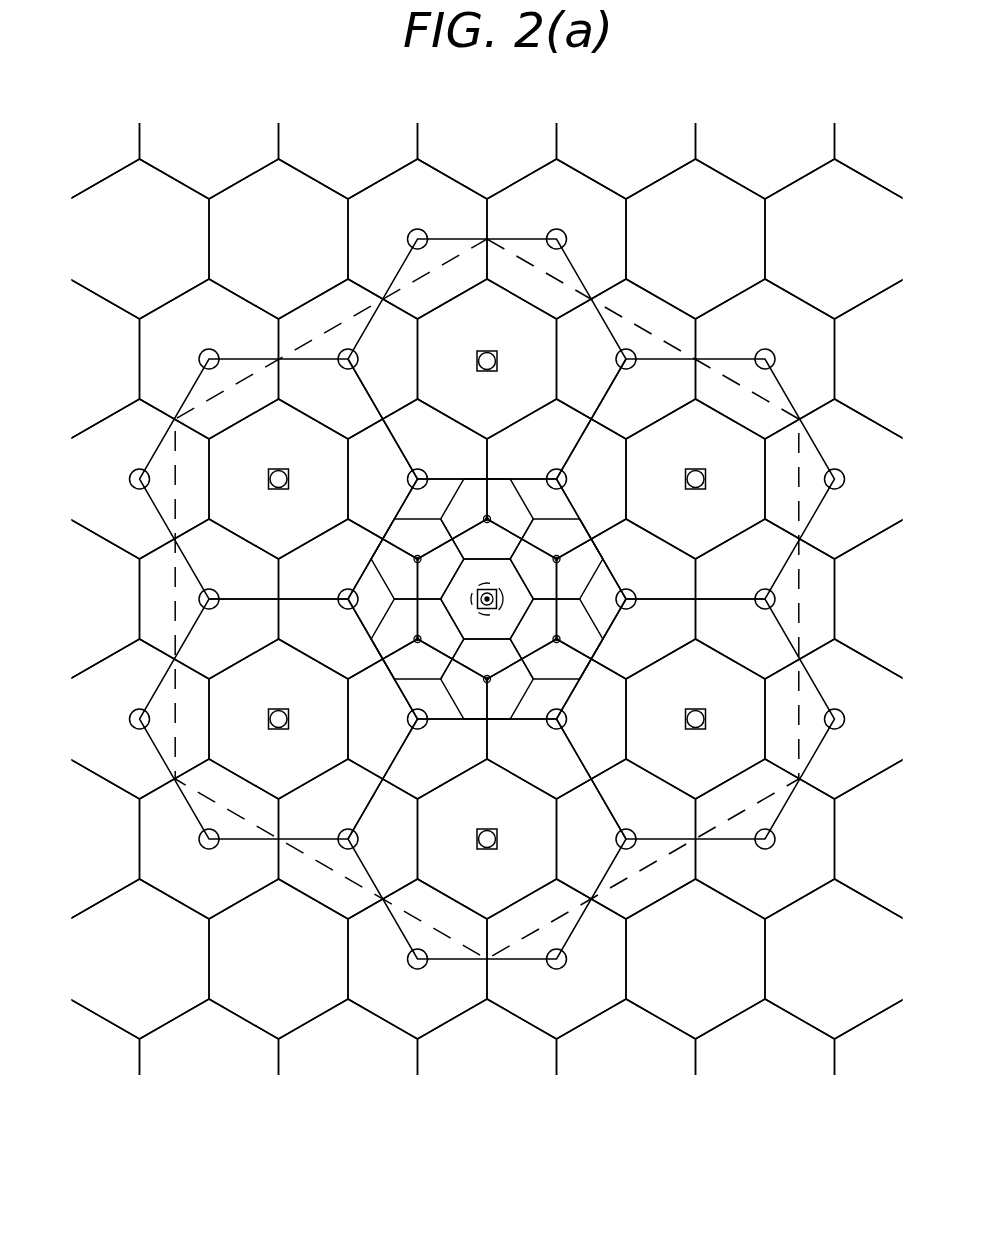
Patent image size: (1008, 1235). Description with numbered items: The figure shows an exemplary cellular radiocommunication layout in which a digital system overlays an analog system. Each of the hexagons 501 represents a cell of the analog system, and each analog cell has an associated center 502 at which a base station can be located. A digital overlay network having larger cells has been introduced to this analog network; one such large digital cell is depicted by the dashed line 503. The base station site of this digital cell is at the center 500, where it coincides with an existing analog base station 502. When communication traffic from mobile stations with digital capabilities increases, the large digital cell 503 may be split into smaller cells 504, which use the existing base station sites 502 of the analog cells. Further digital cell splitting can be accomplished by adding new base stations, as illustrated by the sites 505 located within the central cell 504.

The center 500 is at (501, 598).
The hexagons 501 is at (360, 414).
The centers 502 is at (358, 360).
The dashed line 503 is at (806, 598).
The smaller cells 504 is at (570, 262).
The sites 505 is at (488, 518).